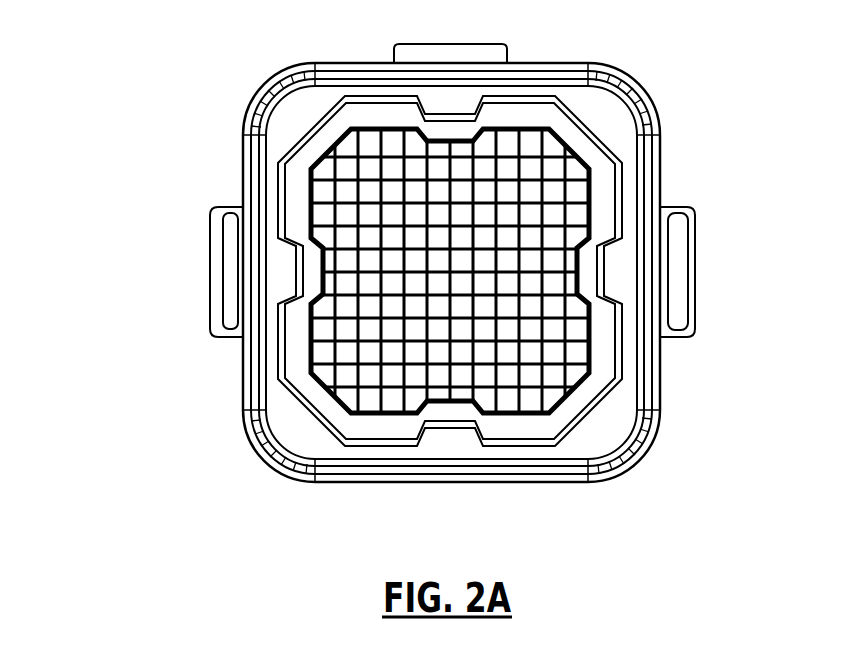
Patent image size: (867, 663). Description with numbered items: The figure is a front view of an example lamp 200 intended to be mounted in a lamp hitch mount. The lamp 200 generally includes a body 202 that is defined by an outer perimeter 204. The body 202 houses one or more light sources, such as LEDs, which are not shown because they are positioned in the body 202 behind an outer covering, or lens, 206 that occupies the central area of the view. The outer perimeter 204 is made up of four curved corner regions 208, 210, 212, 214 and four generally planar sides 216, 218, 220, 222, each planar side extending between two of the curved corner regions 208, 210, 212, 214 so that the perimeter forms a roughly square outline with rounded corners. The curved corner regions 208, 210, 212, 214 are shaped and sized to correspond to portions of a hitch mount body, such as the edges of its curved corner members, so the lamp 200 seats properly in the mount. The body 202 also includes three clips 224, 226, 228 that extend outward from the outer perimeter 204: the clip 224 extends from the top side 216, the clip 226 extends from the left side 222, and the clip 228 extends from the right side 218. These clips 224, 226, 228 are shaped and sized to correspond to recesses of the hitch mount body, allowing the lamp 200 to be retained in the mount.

The lamp 200 is at (176, 39).
The body 202 is at (316, 425).
The outer perimeter 204 is at (652, 142).
The outer covering 206 is at (520, 327).
The curved corner region 208 is at (265, 92).
The curved corner region 210 is at (627, 80).
The curved corner region 212 is at (640, 448).
The curved corner region 214 is at (256, 435).
The planar side 216 is at (368, 62).
The planar side 218 is at (658, 182).
The planar side 220 is at (480, 473).
The planar side 222 is at (244, 358).
The clip 224 is at (430, 42).
The clip 226 is at (209, 262).
The clip 228 is at (692, 227).